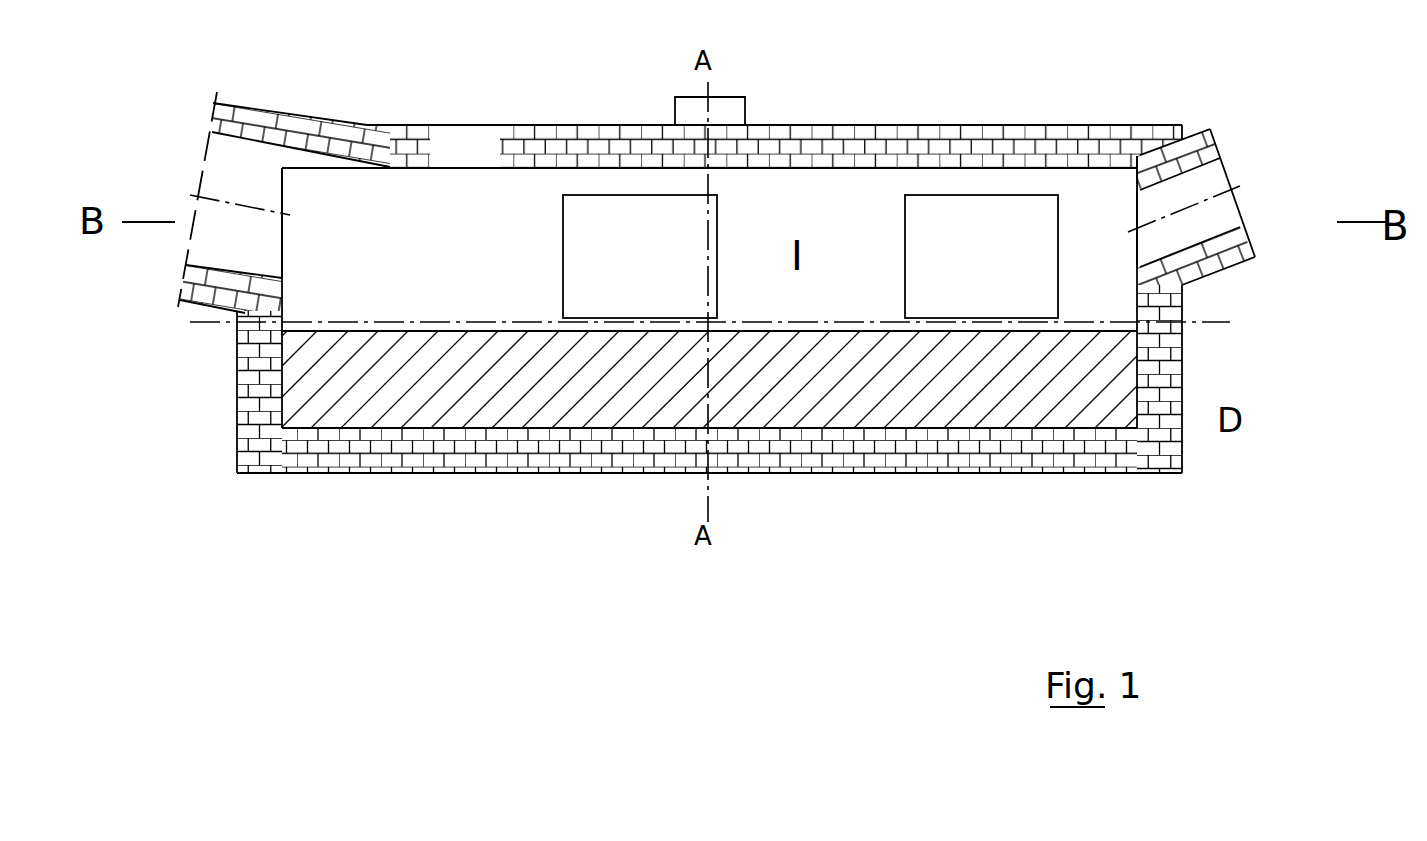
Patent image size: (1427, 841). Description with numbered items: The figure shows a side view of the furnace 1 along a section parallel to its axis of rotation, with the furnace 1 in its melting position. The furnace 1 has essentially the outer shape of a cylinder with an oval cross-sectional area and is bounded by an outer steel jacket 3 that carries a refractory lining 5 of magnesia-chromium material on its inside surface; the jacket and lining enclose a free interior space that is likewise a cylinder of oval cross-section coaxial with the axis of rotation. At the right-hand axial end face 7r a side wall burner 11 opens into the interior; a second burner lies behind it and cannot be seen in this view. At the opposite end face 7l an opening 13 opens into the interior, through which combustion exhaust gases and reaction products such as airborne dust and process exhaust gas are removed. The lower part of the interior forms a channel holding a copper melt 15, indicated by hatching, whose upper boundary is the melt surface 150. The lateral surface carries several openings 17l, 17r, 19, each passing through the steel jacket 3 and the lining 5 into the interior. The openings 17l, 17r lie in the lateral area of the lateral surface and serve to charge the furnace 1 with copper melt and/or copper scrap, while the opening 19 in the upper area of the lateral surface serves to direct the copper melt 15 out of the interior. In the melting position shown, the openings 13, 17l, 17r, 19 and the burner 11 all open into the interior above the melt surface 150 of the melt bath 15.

The furnace 1 is at (722, 380).
The outer steel jacket 3 is at (998, 125).
The refractory lining 5 is at (868, 137).
The axial end face 7l is at (328, 244).
The axial end face 7r is at (1117, 228).
The side wall burner 11 is at (1220, 212).
The opening 13 is at (223, 182).
The copper melt 15 is at (893, 408).
The opening 17l is at (590, 270).
The opening 17r is at (935, 276).
The opening 19 is at (733, 100).
The melt surface 150 is at (441, 322).